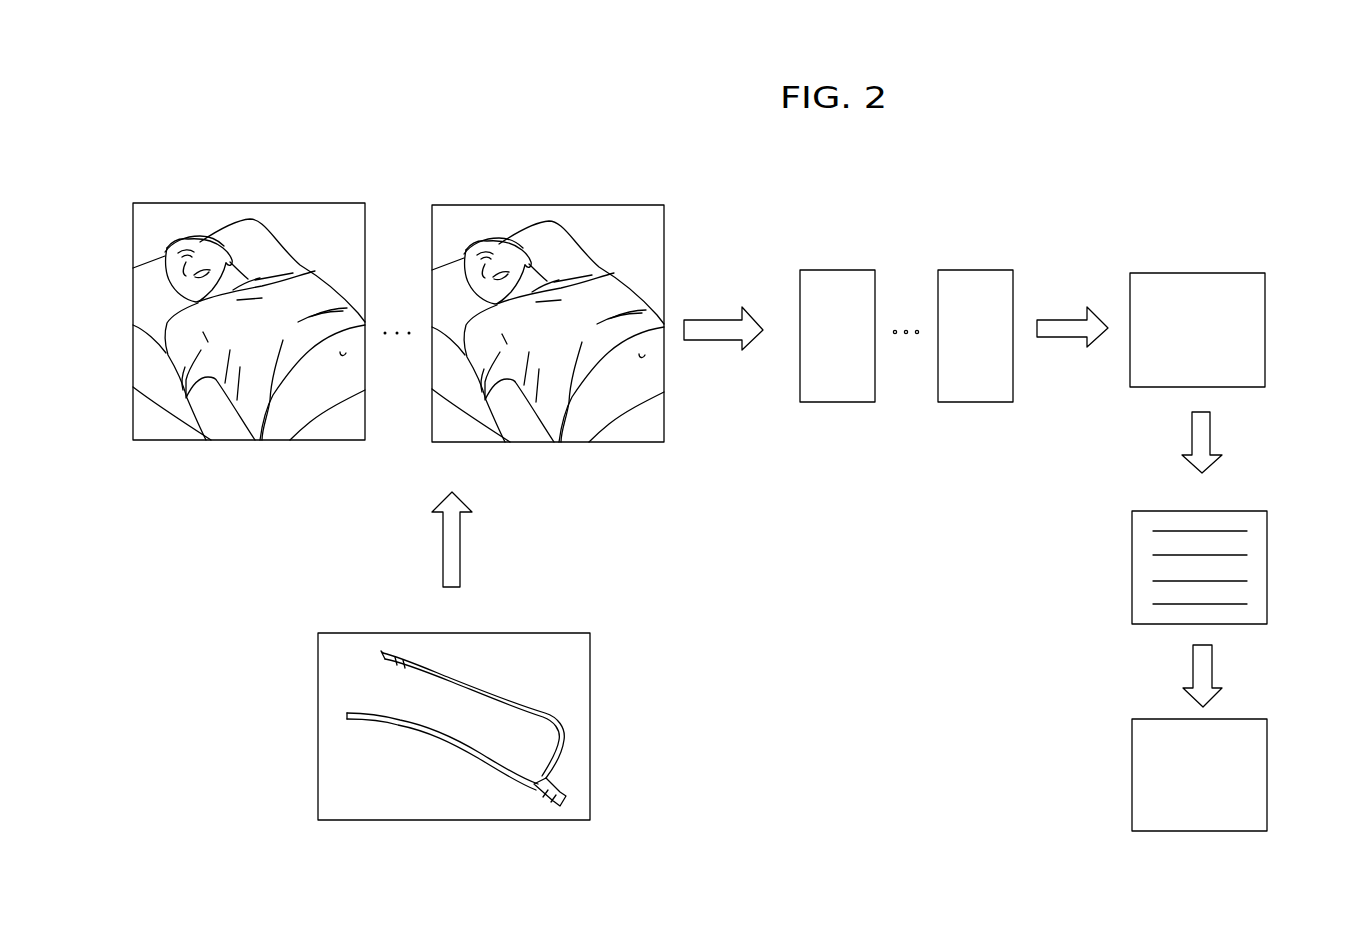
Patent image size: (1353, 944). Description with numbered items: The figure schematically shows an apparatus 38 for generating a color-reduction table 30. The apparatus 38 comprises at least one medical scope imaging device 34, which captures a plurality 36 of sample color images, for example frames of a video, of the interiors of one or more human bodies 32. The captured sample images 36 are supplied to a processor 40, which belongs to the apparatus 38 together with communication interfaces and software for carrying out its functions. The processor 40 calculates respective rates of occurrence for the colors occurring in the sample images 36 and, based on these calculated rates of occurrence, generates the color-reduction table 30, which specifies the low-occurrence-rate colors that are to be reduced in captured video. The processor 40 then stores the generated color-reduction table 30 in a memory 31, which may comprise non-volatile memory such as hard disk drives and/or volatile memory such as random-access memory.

The color-reduction table 30 is at (1267, 531).
The memory 31 is at (1267, 765).
The human bodies 32 is at (286, 203).
The medical scope imaging device 34 is at (390, 720).
The plurality of sample color images 36 is at (1025, 218).
The apparatus 38 is at (1075, 160).
The processor 40 is at (1232, 273).